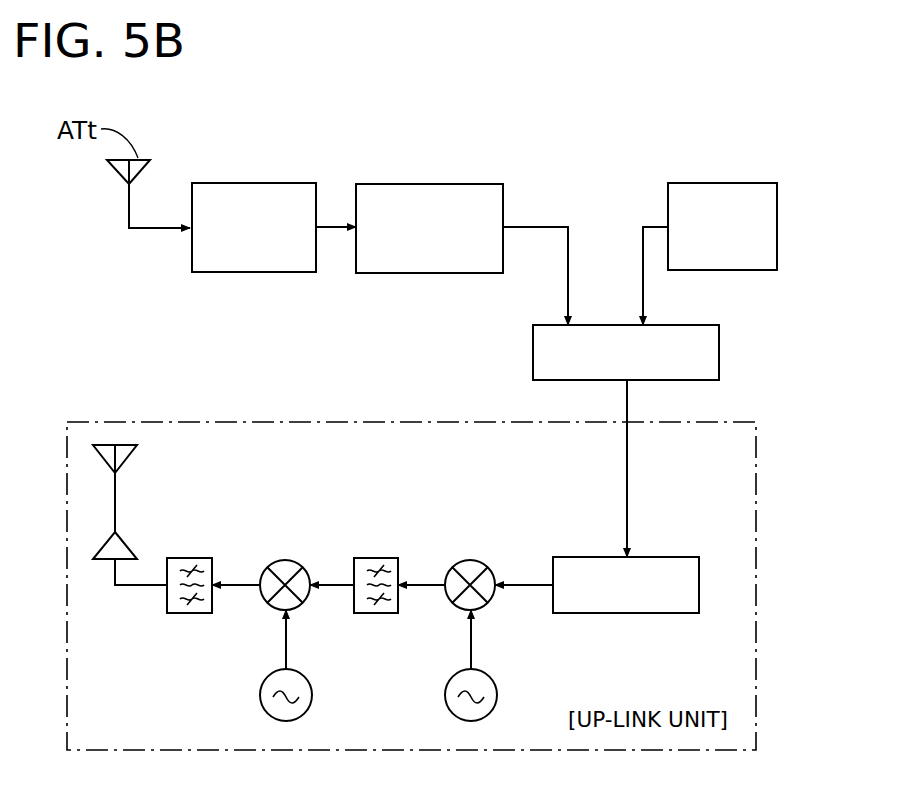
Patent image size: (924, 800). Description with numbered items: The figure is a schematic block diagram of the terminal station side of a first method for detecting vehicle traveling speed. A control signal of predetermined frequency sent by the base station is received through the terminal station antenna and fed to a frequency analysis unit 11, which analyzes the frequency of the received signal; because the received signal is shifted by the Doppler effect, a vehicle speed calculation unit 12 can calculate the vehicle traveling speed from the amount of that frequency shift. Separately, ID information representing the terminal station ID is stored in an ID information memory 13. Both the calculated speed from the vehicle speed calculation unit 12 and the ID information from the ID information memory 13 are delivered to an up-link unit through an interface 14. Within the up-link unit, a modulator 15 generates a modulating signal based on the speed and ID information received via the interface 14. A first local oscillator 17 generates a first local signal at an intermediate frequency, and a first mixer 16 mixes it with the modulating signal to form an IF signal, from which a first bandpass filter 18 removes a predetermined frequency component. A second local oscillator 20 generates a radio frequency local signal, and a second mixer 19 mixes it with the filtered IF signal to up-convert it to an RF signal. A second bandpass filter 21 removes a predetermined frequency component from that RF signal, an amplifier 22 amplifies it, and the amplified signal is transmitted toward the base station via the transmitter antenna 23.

The frequency analysis unit 11 is at (289, 183).
The vehicle speed calculation unit 12 is at (470, 184).
The ID information memory 13 is at (751, 183).
The interface 14 is at (692, 325).
The modulator 15 is at (673, 557).
The first mixer 16 is at (480, 562).
The first local oscillator 17 is at (492, 674).
The first bandpass filter 18 is at (381, 558).
The second mixer 19 is at (295, 562).
The second local oscillator 20 is at (306, 674).
The second bandpass filter 21 is at (199, 558).
The amplifier 22 is at (106, 560).
The transmitter antenna 23 is at (130, 458).